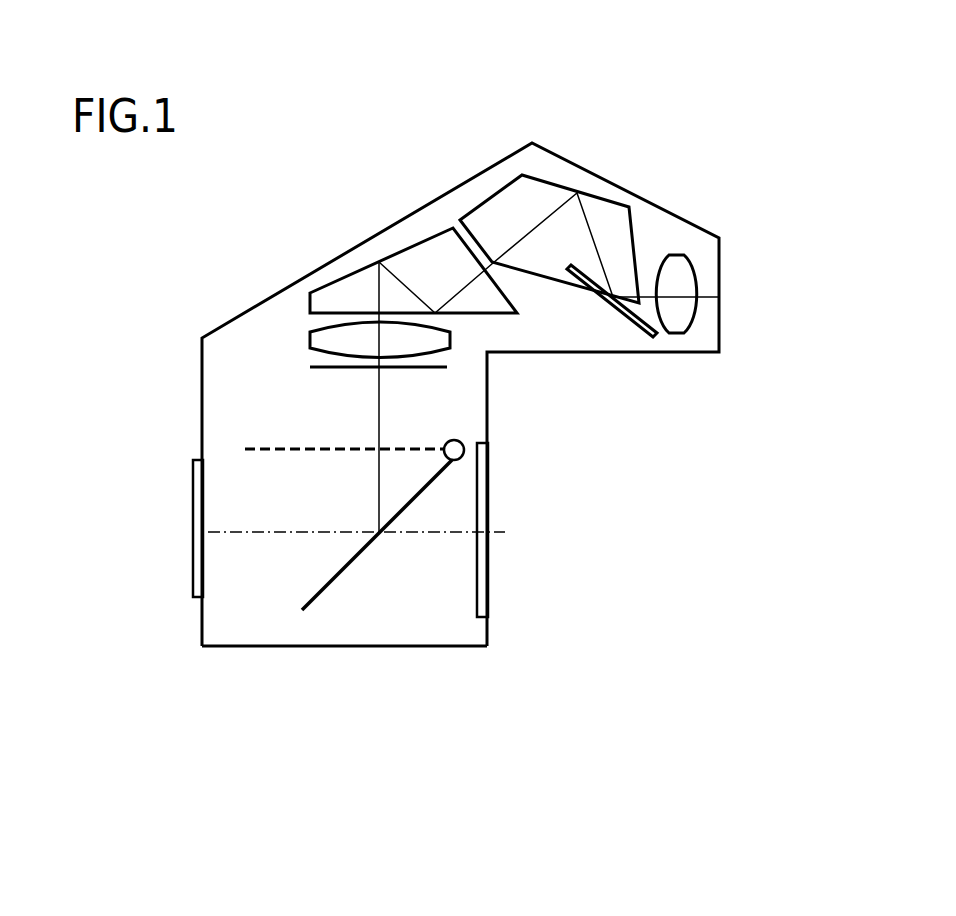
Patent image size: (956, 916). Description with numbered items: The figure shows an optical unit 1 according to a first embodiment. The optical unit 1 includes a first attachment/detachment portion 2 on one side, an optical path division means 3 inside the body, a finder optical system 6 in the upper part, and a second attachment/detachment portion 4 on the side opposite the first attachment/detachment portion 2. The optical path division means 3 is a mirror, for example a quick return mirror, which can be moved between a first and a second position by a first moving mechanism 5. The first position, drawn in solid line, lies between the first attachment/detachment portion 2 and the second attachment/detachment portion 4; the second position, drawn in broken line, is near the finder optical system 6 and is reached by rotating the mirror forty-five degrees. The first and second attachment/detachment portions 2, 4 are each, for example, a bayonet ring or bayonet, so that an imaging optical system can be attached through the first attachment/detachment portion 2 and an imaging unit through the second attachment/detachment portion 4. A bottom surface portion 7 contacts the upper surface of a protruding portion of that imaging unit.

The optical unit 1 is at (770, 116).
The first attachment/detachment portion 2 is at (193, 480).
The optical path division means 3 is at (323, 582).
The second attachment/detachment portion 4 is at (485, 566).
The first moving mechanism 5 is at (458, 441).
The finder optical system 6 is at (708, 145).
The bottom surface portion 7 is at (418, 648).